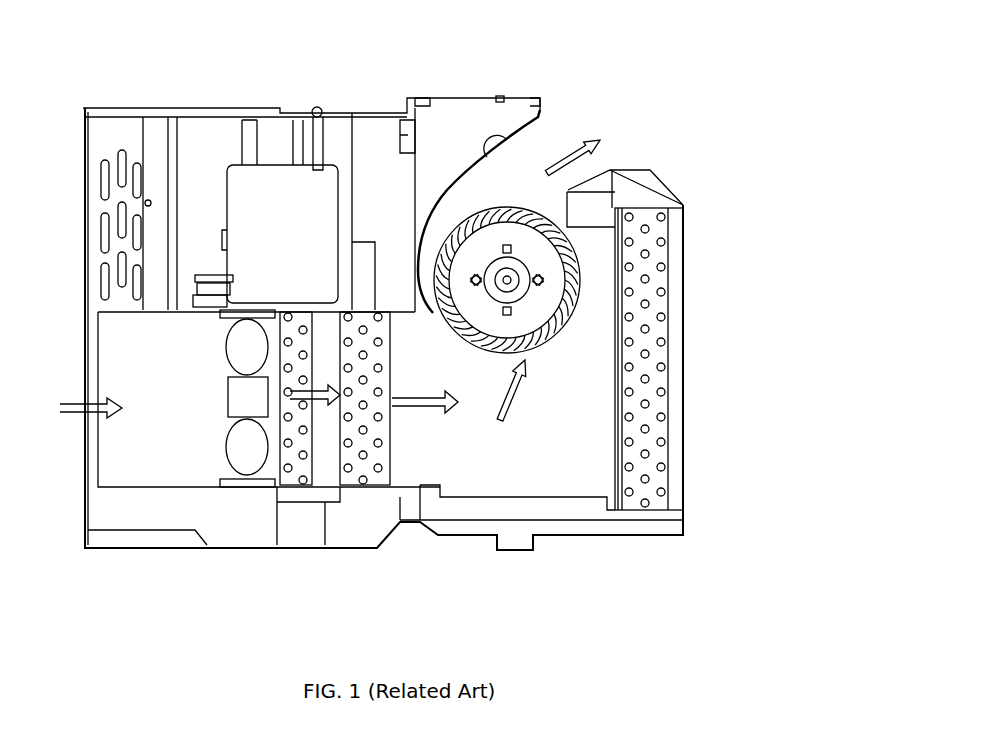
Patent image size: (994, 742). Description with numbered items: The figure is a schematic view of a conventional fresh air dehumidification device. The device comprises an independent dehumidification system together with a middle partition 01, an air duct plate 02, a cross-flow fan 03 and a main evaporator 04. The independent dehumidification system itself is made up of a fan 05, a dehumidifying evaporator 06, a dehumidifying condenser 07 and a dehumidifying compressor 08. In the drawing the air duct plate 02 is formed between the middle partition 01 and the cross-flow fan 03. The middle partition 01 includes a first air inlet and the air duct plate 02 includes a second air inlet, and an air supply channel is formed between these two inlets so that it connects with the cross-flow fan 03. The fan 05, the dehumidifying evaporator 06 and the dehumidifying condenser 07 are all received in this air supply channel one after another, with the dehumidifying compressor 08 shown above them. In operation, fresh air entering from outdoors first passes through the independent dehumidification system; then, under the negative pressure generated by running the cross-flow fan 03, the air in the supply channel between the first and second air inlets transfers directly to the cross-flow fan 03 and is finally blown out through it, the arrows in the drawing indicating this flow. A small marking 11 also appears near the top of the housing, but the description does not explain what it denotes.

The middle partition 01 is at (408, 147).
The air duct plate 02 is at (482, 157).
The cross-flow fan 03 is at (578, 300).
The main evaporator 04 is at (665, 415).
The fan 05 is at (240, 467).
The dehumidifying evaporator 06 is at (308, 490).
The dehumidifying condenser 07 is at (370, 485).
The dehumidifying compressor 08 is at (273, 210).
The housing tab 11 is at (498, 91).